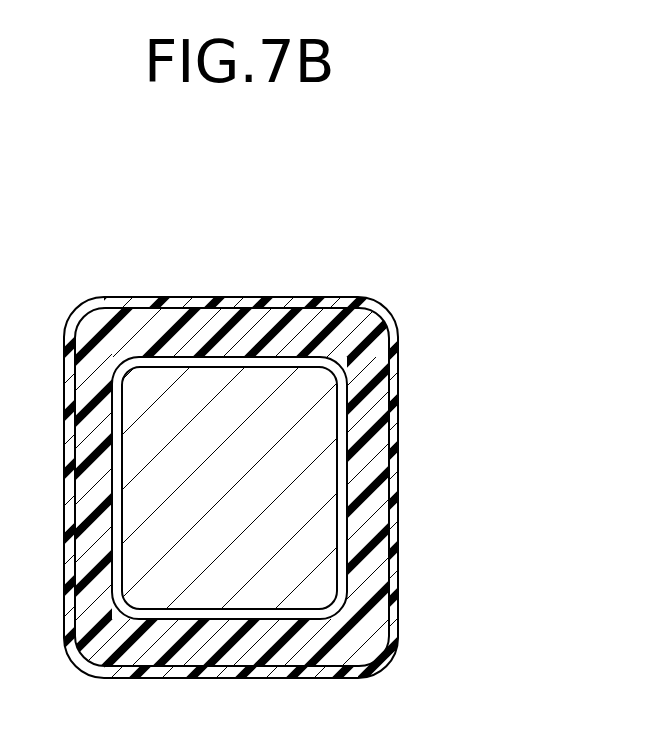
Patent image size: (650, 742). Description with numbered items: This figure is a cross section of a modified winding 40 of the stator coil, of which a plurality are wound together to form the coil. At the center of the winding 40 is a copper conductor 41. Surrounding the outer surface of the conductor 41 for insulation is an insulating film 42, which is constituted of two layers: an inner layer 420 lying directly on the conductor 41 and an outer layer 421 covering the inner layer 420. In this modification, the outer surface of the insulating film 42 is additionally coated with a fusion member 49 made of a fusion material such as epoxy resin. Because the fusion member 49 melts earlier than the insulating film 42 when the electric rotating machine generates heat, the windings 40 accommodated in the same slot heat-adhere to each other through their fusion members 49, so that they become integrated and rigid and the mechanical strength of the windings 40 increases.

The winding 40 is at (236, 267).
The copper conductor 41 is at (290, 583).
The insulating film 42 is at (325, 371).
The inner layer 420 is at (347, 413).
The outer layer 421 is at (373, 373).
The fusion member 49 is at (391, 495).